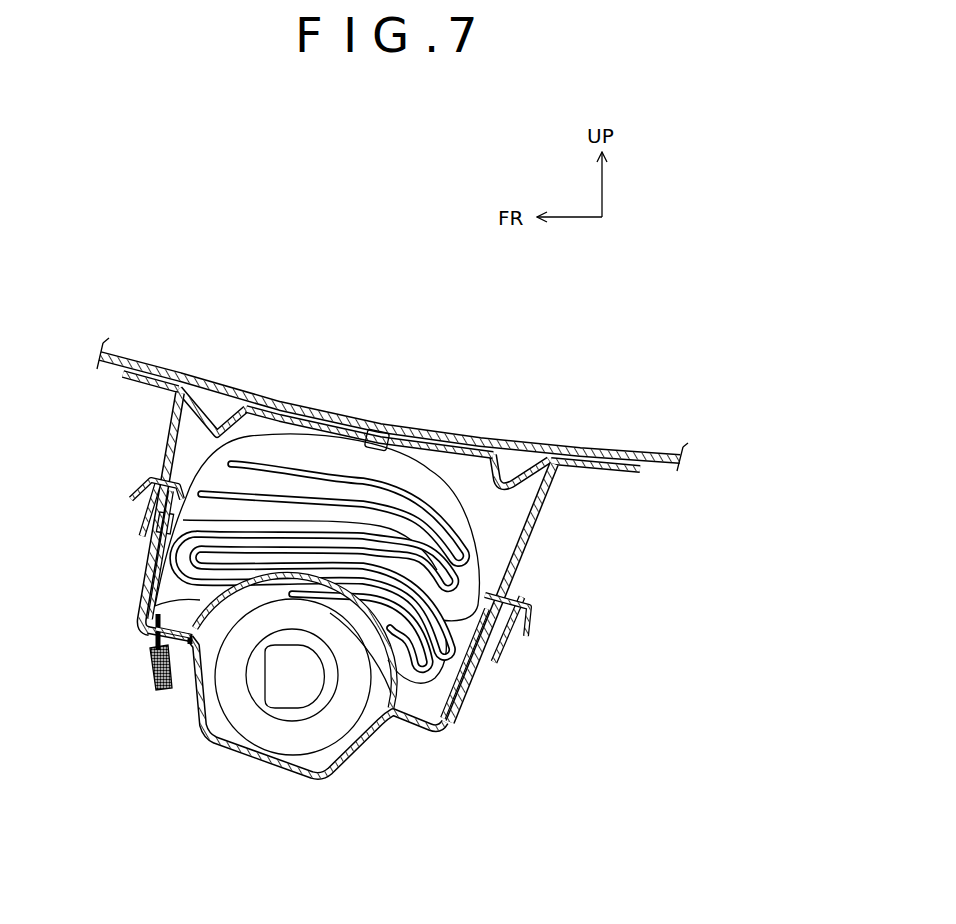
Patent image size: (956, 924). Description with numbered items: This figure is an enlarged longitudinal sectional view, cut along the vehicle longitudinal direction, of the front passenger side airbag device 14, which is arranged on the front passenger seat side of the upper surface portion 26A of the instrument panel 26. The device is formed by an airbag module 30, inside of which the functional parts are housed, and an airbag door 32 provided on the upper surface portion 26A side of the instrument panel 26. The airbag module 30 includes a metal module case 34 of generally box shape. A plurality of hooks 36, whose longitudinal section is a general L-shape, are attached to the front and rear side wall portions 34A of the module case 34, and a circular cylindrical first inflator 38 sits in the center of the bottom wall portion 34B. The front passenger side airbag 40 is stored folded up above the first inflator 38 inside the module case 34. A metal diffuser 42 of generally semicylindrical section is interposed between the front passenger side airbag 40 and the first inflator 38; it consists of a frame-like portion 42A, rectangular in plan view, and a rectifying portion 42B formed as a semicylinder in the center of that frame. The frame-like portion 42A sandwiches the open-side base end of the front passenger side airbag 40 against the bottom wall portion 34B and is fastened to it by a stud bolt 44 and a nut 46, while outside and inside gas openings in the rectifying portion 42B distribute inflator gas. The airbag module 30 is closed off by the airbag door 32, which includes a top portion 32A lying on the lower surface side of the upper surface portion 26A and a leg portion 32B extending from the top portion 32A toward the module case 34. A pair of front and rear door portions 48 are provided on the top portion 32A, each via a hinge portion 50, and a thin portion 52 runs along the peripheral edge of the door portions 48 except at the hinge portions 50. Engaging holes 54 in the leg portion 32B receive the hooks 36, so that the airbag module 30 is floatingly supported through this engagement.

The front passenger side airbag device 14 is at (488, 775).
The instrument panel 26 is at (621, 444).
The upper surface portion 26A is at (667, 452).
The airbag module 30 is at (178, 735).
The airbag door 32 is at (553, 518).
The top portion 32A is at (132, 376).
The leg portion 32B is at (164, 430).
The module case 34 is at (414, 731).
The side wall portions 34A is at (150, 562).
The bottom wall portion 34B is at (297, 777).
The hooks 36 is at (131, 492).
The first inflator 38 is at (262, 740).
The front passenger side airbag 40 is at (460, 525).
The diffuser 42 is at (147, 624).
The frame-like portion 42A is at (470, 727).
The rectifying portion 42B is at (402, 730).
The stud bolt 44 is at (158, 690).
The nut 46 is at (155, 656).
The door portions 48 is at (325, 412).
The hinge portions 50 is at (238, 408).
The thin portion 52 is at (377, 432).
The engaging holes 54 is at (145, 507).